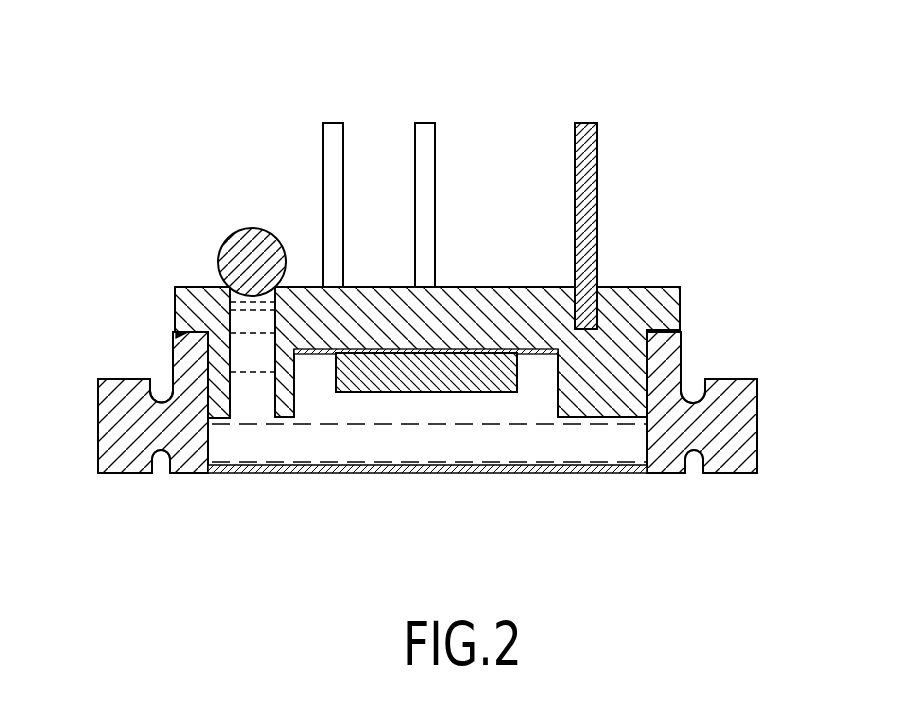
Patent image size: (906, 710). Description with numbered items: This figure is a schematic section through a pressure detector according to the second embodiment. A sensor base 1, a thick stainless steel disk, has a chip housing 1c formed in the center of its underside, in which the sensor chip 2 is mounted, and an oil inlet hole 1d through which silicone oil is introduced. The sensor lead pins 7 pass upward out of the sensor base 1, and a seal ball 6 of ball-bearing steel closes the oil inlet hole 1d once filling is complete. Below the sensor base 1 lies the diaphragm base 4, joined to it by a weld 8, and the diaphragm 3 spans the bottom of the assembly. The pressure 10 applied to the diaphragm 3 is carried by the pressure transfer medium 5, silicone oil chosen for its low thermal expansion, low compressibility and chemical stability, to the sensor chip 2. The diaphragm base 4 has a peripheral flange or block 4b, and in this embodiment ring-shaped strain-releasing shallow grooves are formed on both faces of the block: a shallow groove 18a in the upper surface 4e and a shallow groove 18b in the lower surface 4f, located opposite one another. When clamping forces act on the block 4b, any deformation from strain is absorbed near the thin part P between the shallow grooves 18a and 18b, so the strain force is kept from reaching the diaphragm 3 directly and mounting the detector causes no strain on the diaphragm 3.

The sensor base 1 is at (650, 286).
The chip housing 1c is at (549, 392).
The oil inlet hole 1d is at (231, 311).
The sensor chip 2 is at (440, 377).
The diaphragm 3 is at (505, 477).
The diaphragm base 4 is at (757, 455).
The peripheral flange or block 4b is at (133, 425).
The upper surface of the block 4e is at (98, 380).
The lower surface of the block 4f is at (122, 475).
The pressure transfer medium 5 is at (522, 423).
The seal ball 6 is at (245, 240).
The sensor lead pins 7 is at (418, 127).
The weld 8 is at (675, 333).
The pressure 10 is at (430, 481).
The shallow groove 18a is at (158, 390).
The shallow groove 18b is at (161, 463).
The thin part P is at (162, 424).